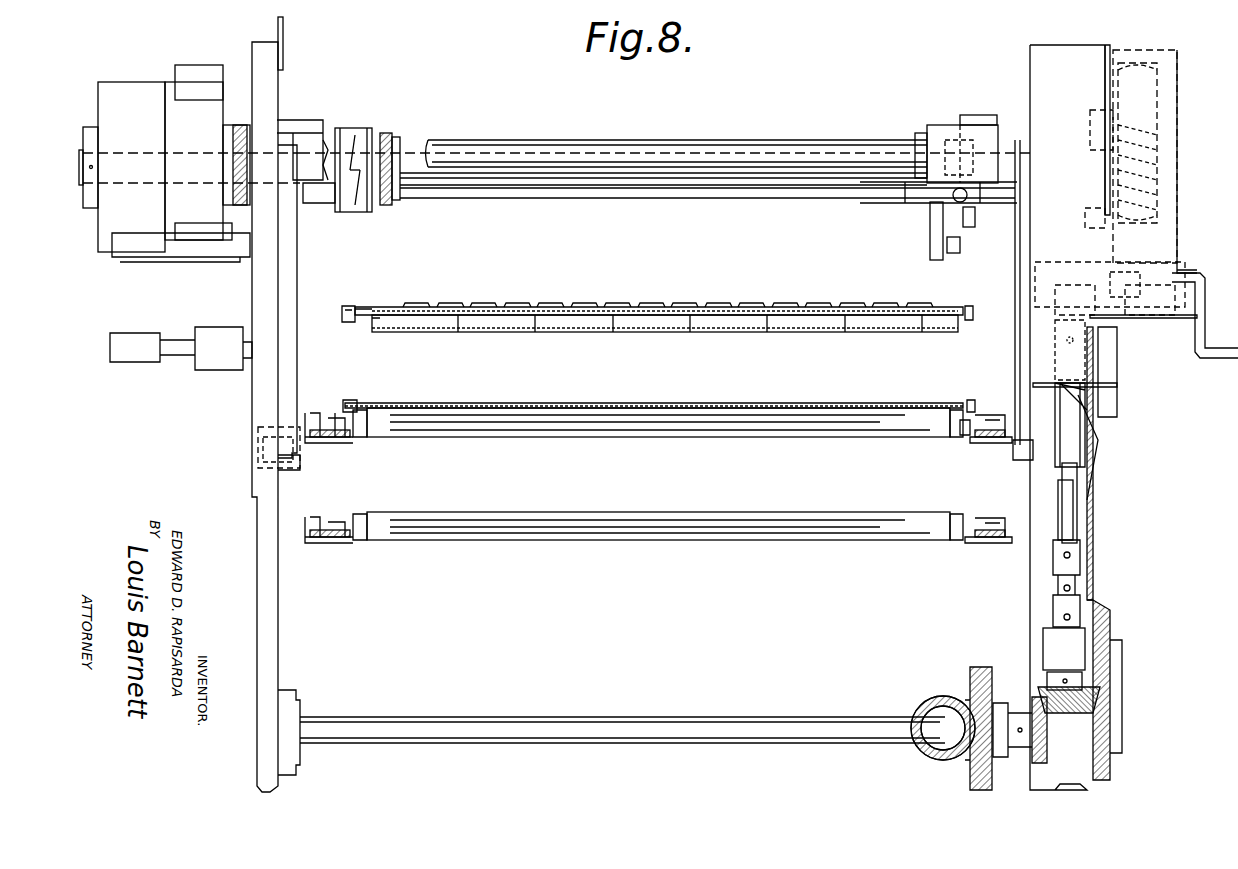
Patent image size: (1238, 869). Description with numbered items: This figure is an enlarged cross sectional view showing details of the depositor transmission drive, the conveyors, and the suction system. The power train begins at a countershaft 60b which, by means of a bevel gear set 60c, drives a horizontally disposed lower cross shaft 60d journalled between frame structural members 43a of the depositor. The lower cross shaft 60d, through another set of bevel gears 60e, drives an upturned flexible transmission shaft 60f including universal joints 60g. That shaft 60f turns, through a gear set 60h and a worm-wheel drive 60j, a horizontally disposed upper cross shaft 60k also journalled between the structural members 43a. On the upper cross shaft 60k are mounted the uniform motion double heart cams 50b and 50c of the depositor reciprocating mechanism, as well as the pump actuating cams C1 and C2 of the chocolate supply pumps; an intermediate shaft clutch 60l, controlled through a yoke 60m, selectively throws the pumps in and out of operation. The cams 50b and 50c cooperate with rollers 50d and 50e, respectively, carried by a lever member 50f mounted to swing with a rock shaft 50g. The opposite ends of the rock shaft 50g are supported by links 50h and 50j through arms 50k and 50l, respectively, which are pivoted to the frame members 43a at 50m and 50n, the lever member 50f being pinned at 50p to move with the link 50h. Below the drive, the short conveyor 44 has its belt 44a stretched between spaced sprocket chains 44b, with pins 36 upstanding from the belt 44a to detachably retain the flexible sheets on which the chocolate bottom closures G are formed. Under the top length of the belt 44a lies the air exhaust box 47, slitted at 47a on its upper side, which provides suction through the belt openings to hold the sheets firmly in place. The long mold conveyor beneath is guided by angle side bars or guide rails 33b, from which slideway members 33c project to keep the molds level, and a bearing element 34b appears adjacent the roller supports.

The pump actuating cam C1 is at (125, 98).
The pump actuating cam C2 is at (170, 85).
The frame structural member 43a is at (280, 603).
The link 50j is at (293, 265).
The intermediate shaft clutch 60l is at (363, 130).
The yoke 60m is at (390, 133).
The rock shaft 50g is at (642, 140).
The upper cross shaft 60k is at (795, 186).
The lever member 50f is at (930, 132).
The roller 50d is at (978, 115).
The pin 50p is at (925, 200).
The double heart cam 50c is at (930, 236).
The double heart cam 50b is at (970, 228).
The roller 50e is at (950, 253).
The worm-wheel drive 60j is at (1170, 140).
The link 50h is at (1018, 298).
The gear set 60h is at (1115, 330).
The flexible transmission shaft 60f is at (1070, 495).
The universal joint 60g is at (1090, 385).
The pivot 50m is at (1088, 448).
The arm 50k is at (1075, 500).
The bevel gear set 60e is at (1045, 740).
The bevel gear set 60c is at (978, 672).
The countershaft 60b is at (940, 742).
The lower cross shaft 60d is at (698, 717).
The air exhaust box 47 is at (659, 336).
The slit 47a is at (618, 334).
The bottom closure G is at (692, 303).
The pin 36 is at (370, 306).
The sprocket chain 44b is at (350, 305).
The short conveyor 44 is at (360, 328).
The conveyor belt 44a is at (595, 403).
The guide rail 33b is at (307, 415).
The slideway member 33c is at (350, 445).
The bearing 34b is at (992, 418).
The pivot 50n is at (258, 455).
The arm 50l is at (283, 462).